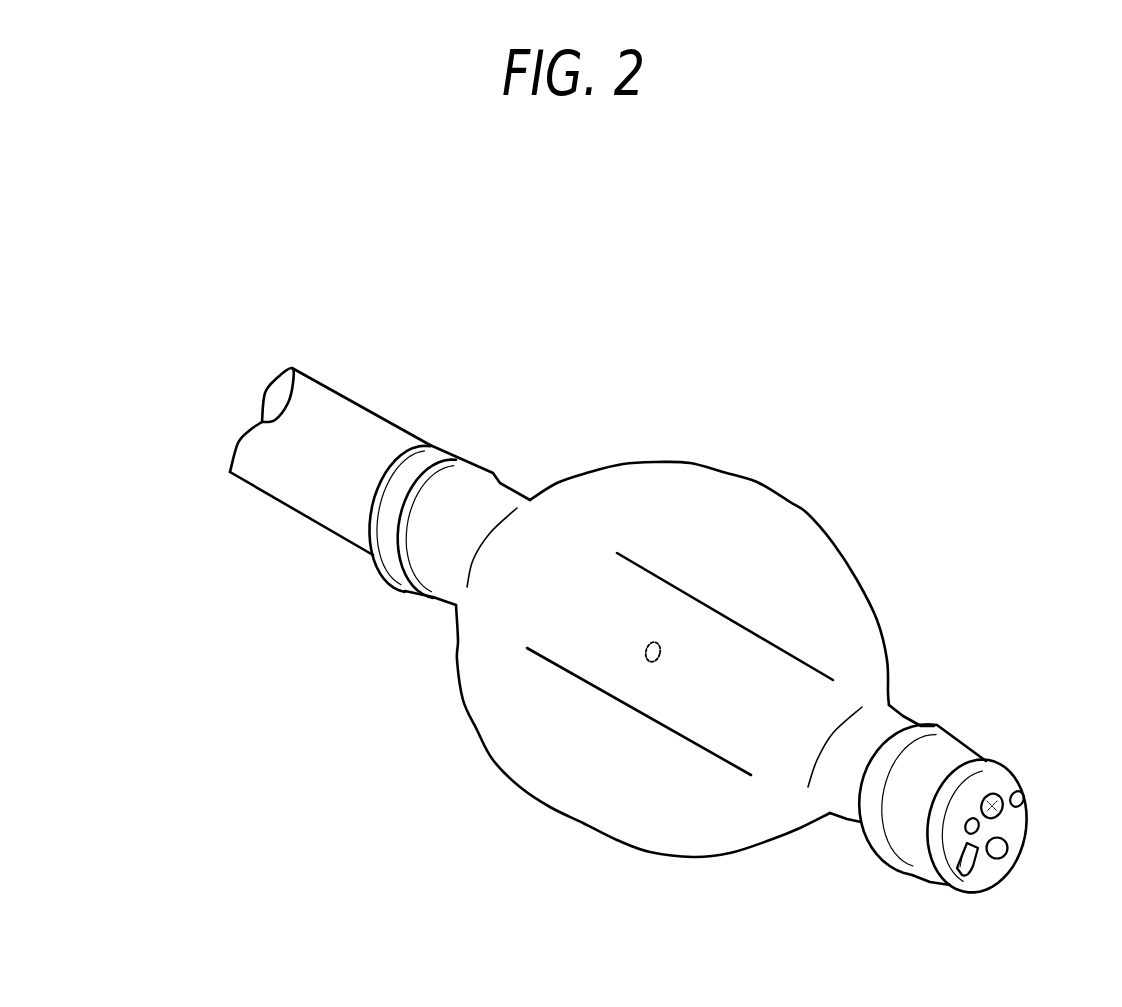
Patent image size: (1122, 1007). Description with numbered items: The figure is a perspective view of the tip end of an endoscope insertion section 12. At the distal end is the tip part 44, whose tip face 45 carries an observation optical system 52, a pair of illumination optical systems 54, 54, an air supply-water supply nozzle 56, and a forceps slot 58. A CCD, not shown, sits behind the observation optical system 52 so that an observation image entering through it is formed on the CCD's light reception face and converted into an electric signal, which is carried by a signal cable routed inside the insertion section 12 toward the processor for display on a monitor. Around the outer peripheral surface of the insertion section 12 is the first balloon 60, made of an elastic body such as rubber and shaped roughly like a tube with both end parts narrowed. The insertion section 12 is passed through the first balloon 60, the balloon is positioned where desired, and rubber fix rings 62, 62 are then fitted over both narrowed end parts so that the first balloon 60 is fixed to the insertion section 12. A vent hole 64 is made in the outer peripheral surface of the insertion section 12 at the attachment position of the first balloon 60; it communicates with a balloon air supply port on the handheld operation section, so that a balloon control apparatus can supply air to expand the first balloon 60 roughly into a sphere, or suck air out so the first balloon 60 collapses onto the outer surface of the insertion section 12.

The insertion section 12 is at (353, 397).
The tip part 44 is at (967, 757).
The tip face 45 is at (1020, 829).
The observation optical system 52 is at (996, 798).
The illumination optical system 54 is at (1024, 799).
The air supply-water supply nozzle 56 is at (972, 874).
The forceps slot 58 is at (1003, 852).
The first balloon 60 is at (757, 481).
The rubber fix ring 62 is at (392, 586).
The vent hole 64 is at (645, 652).